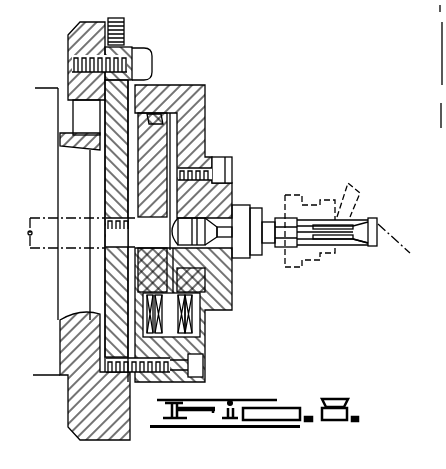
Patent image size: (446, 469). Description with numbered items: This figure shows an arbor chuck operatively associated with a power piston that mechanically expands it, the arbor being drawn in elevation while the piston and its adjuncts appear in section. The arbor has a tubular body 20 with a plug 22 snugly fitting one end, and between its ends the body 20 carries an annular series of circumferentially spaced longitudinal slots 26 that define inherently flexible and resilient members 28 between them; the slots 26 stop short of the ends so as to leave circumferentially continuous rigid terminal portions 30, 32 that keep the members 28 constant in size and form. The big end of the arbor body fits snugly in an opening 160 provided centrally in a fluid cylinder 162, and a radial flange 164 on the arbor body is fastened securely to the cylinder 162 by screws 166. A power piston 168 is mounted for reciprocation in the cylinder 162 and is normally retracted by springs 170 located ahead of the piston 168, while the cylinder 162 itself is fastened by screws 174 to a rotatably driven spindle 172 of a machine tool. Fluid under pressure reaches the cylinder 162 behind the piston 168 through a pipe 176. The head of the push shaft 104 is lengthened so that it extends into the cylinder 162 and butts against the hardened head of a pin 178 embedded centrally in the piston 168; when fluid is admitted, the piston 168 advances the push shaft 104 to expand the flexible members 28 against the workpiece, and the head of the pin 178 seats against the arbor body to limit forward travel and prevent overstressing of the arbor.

The tubular body 20 is at (369, 205).
The plug 22 is at (380, 222).
The longitudinal slots 26 is at (320, 224).
The flexible members 28 is at (342, 240).
The terminal portion 30 is at (357, 242).
The terminal portion 32 is at (248, 259).
The push shaft 104 is at (190, 214).
The opening 160 is at (228, 190).
The fluid cylinder 162 is at (197, 137).
The radial flange 164 is at (223, 157).
The screws 166 is at (235, 172).
The power piston 168 is at (164, 122).
The springs 170 is at (197, 317).
The spindle 172 is at (42, 366).
The screws 174 is at (150, 57).
The pipe 176 is at (68, 216).
The pin 178 is at (133, 258).